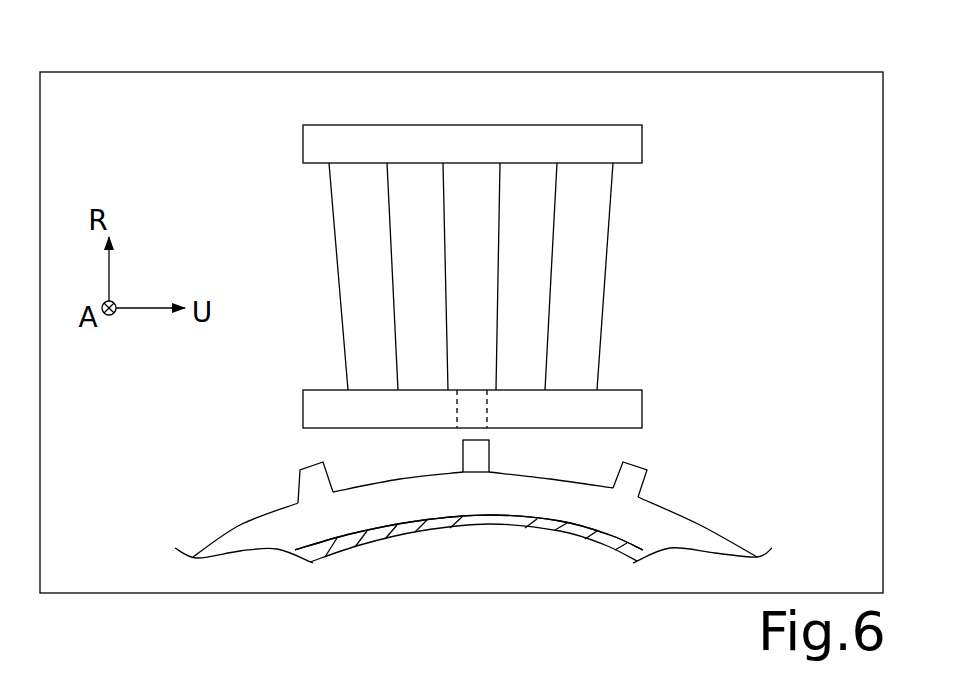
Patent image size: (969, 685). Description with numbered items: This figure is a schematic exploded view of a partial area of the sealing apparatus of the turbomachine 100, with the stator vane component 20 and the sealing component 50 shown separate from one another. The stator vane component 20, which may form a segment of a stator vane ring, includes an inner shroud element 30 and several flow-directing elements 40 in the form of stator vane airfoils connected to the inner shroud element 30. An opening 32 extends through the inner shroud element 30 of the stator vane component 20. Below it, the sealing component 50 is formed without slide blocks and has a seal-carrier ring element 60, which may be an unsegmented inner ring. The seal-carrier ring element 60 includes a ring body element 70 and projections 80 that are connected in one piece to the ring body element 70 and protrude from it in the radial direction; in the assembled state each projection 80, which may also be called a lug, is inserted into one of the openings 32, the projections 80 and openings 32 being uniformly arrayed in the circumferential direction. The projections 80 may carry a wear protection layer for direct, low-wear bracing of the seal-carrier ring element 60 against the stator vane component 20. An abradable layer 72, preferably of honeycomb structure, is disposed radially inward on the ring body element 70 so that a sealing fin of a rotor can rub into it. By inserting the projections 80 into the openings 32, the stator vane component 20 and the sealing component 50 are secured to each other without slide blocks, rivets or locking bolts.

The turbomachine 100 is at (748, 72).
The stator vane component 20 is at (647, 137).
The inner shroud element 30 is at (615, 403).
The opening 32 is at (465, 422).
The flow-directing element 40 is at (353, 207).
The sealing component 50 is at (490, 518).
The seal-carrier ring element 60 is at (767, 565).
The ring body element 70 is at (270, 503).
The abradable layer 72 is at (573, 527).
The projections 80 is at (478, 452).